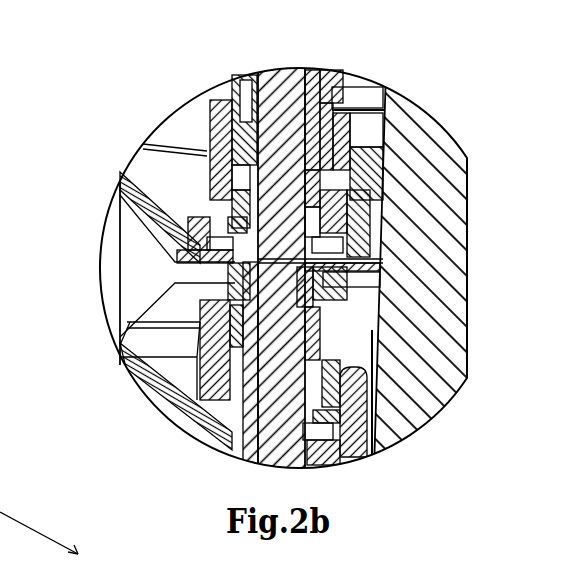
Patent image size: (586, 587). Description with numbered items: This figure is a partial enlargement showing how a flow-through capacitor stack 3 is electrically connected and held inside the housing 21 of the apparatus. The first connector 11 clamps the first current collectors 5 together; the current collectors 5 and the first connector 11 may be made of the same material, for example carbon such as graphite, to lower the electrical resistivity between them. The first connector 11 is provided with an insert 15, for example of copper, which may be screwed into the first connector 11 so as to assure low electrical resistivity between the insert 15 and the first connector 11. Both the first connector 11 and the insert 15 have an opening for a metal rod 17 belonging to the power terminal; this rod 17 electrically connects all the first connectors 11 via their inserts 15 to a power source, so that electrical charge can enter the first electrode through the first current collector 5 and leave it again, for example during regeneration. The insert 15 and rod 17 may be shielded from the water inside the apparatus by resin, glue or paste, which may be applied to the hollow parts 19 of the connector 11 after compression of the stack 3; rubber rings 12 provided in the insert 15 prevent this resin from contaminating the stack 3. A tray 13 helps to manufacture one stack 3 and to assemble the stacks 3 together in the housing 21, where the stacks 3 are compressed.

The stack 3 is at (120, 280).
The first current collector 5 is at (300, 261).
The first connector 11 is at (380, 300).
The rubber ring 12 is at (232, 108).
The tray 13 is at (330, 112).
The insert 15 is at (352, 302).
The rod 17 is at (318, 170).
The hollow part 19 is at (367, 193).
The housing 21 is at (403, 392).